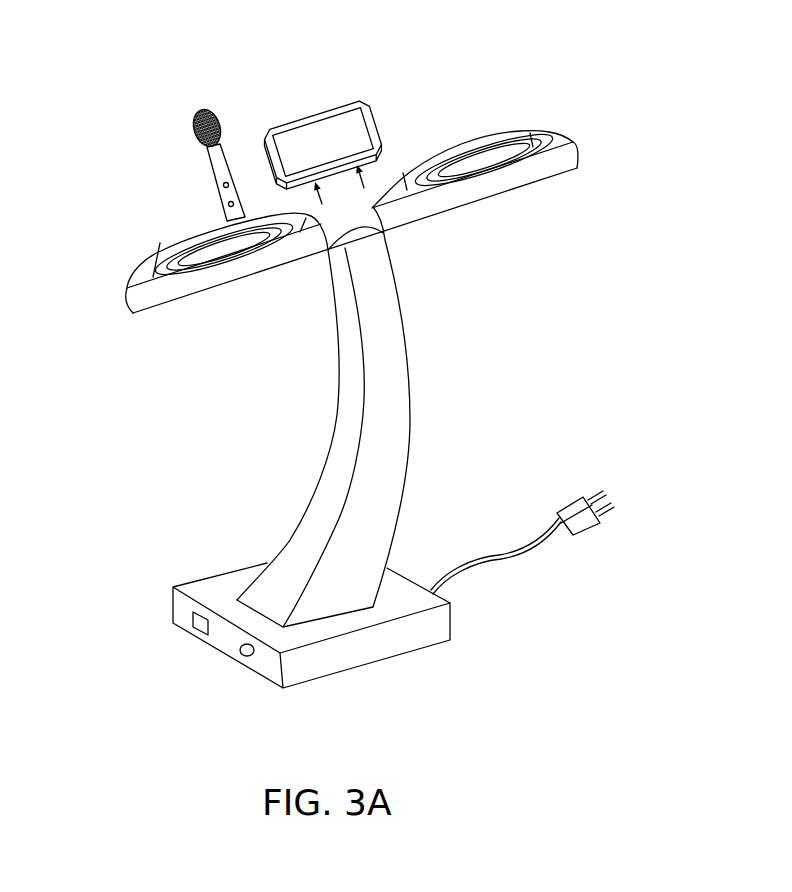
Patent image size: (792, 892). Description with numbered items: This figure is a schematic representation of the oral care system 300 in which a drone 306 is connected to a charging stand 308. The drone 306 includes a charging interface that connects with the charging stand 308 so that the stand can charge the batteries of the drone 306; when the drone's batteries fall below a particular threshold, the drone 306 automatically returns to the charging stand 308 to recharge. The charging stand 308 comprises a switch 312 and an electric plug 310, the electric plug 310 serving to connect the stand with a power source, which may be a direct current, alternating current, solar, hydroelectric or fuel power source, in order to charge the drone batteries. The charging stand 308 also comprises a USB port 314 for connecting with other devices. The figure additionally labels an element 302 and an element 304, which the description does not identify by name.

The oral care system 300 is at (655, 90).
The microphone 302 is at (220, 176).
The display 304 is at (307, 132).
The drone 306 is at (138, 300).
The charging stand 308 is at (390, 407).
The electric plug 310 is at (520, 558).
The switch 312 is at (193, 622).
The USB port 314 is at (240, 650).